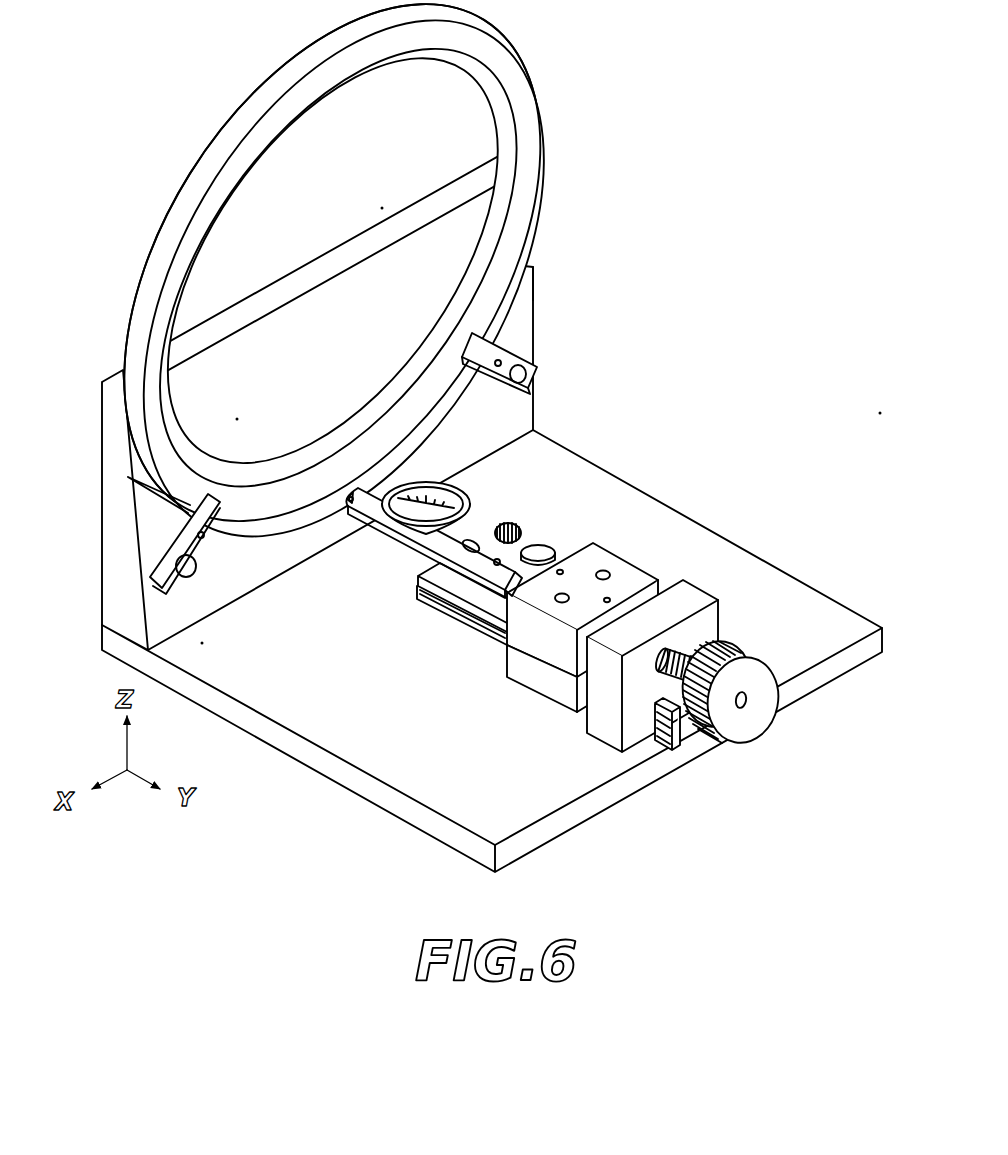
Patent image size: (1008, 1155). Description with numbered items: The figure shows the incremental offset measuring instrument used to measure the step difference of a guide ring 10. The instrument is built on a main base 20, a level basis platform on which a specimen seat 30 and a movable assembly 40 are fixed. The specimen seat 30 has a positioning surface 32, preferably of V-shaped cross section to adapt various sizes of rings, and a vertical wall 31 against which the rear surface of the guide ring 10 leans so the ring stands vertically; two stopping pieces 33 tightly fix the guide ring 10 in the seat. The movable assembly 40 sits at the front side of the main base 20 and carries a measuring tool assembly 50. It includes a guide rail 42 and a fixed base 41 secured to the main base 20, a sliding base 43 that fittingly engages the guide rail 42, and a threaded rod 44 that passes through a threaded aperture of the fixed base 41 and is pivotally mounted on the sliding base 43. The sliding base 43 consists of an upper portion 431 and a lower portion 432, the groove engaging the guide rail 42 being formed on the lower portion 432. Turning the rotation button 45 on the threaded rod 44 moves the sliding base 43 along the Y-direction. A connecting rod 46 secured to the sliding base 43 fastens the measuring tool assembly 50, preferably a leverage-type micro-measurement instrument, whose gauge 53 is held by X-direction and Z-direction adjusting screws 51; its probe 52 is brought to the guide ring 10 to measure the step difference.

The guide ring 10 is at (520, 87).
The main base 20 is at (790, 603).
The specimen seat 30 is at (520, 329).
The vertical wall 31 is at (327, 302).
The positioning surface 32 is at (534, 268).
The stopping pieces 33 is at (212, 522).
The movable assembly 40 is at (631, 520).
The fixed base 41 is at (690, 595).
The guide rail 42 is at (445, 576).
The sliding base 43 is at (516, 638).
The upper portion 431 is at (523, 628).
The lower portion 432 is at (533, 679).
The threaded rod 44 is at (673, 652).
The rotation button 45 is at (750, 712).
The connecting rod 46 is at (438, 603).
The measuring tool assembly 50 is at (493, 500).
The X-direction and Z-direction adjusting screws 51 is at (541, 548).
The probe 52 is at (351, 484).
The gauge 53 is at (449, 486).